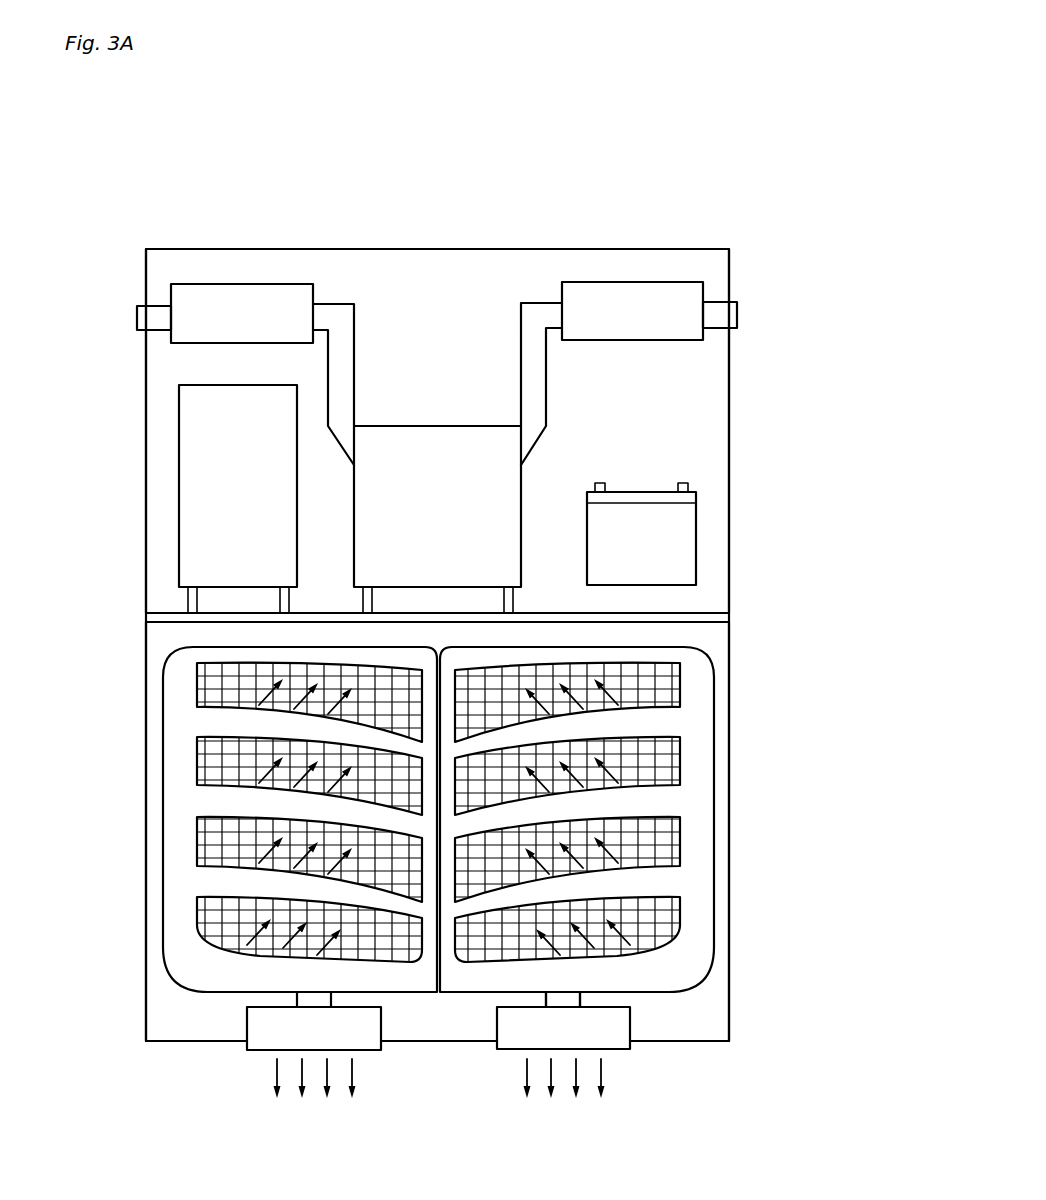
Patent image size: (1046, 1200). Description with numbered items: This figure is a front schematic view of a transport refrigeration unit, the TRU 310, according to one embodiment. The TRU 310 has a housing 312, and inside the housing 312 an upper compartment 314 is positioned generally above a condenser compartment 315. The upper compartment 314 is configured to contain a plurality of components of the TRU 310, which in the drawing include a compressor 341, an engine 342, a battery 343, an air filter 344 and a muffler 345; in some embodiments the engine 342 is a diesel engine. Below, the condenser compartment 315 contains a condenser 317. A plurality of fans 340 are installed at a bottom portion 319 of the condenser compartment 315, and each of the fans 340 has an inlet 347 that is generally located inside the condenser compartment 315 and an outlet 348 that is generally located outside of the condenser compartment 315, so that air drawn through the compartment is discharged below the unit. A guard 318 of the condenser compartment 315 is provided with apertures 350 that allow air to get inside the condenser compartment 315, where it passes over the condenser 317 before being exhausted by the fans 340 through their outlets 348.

The TRU 310 is at (634, 200).
The housing 312 is at (147, 893).
The upper compartment 314 is at (729, 385).
The condenser compartment 315 is at (718, 643).
The condenser 317 is at (215, 842).
The guard 318 is at (642, 875).
The bottom portion 319 is at (187, 1043).
The fans 340 is at (258, 1052).
The compressor 341 is at (177, 420).
The engine 342 is at (453, 420).
The battery 343 is at (697, 515).
The air filter 344 is at (227, 283).
The muffler 345 is at (657, 282).
The inlet 347 is at (605, 1007).
The outlet 348 is at (612, 1050).
The apertures 350 is at (190, 785).